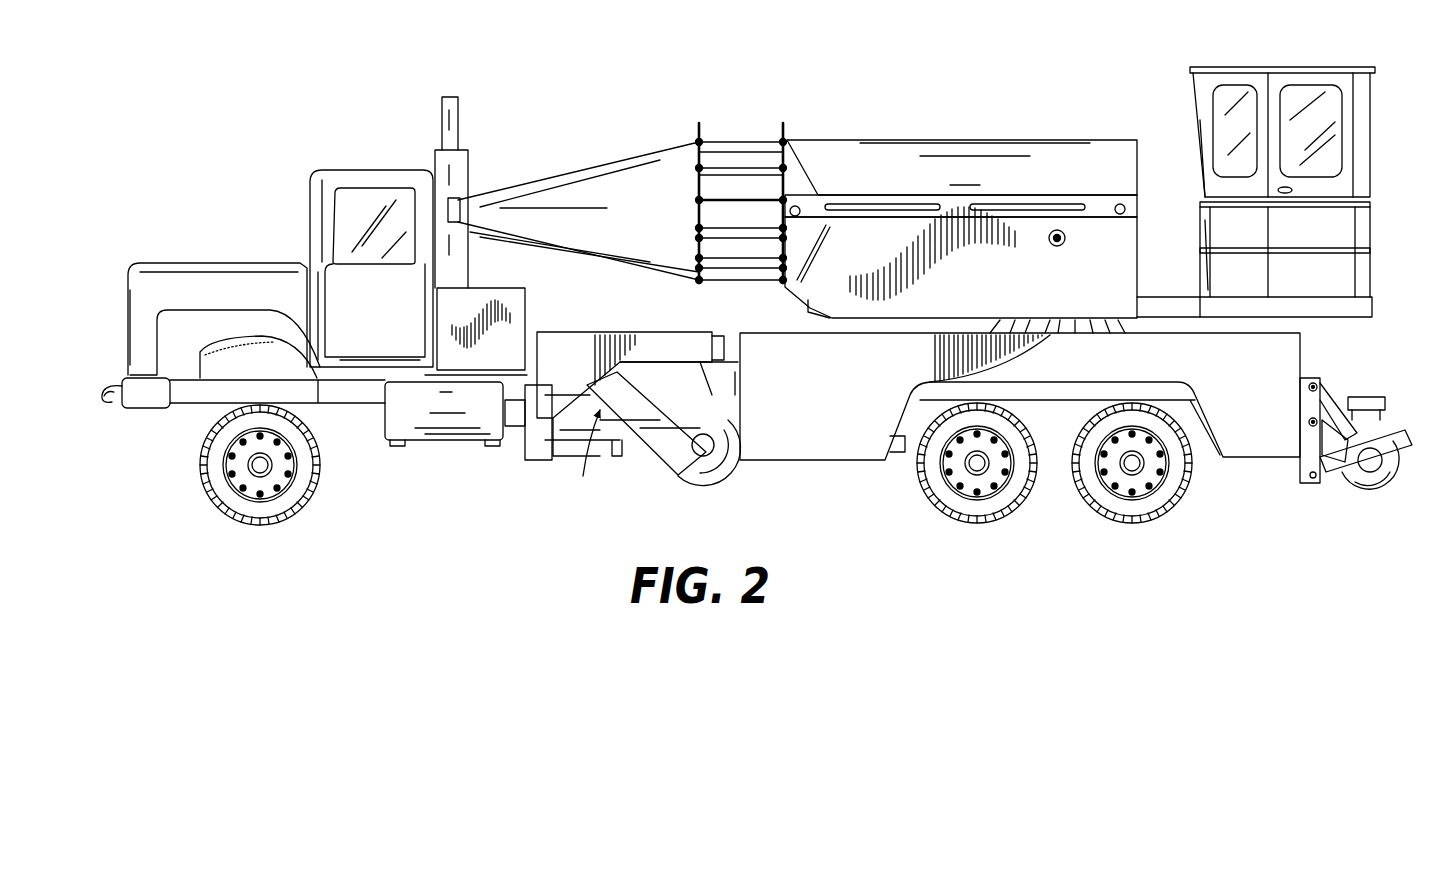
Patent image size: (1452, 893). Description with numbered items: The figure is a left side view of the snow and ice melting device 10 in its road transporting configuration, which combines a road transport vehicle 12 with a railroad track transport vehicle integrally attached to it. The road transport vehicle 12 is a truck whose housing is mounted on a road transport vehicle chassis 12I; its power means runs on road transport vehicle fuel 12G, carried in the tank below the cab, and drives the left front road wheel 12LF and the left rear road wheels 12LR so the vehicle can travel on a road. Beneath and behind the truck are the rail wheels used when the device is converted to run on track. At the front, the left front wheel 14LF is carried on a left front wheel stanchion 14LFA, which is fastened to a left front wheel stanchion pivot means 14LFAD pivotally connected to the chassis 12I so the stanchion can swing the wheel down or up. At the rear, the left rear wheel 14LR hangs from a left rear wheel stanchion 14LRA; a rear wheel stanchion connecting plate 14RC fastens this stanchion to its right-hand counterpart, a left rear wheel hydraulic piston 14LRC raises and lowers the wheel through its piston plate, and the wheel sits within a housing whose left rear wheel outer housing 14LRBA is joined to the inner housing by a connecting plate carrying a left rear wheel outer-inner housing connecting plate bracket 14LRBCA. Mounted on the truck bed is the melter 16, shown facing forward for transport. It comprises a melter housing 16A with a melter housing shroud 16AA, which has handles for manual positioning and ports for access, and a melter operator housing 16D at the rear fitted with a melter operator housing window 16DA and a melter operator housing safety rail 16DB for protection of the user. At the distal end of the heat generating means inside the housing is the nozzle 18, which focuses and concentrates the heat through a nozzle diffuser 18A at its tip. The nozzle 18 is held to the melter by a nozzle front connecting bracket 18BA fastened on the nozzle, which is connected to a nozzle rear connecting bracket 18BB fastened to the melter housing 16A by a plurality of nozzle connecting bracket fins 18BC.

The snow and ice melting device 10 is at (747, 59).
The road transport vehicle 12 is at (375, 163).
The road transport vehicle chassis 12I is at (255, 401).
The road transport vehicle fuel 12G is at (444, 442).
The road transport vehicle left front road wheel 12LF is at (257, 525).
The road transport vehicle left rear road wheel 12LR is at (1082, 502).
The railroad track transport vehicle left front wheel 14LF is at (722, 470).
The railroad track transport vehicle left front wheel stanchion 14LFA is at (683, 481).
The railroad track transport vehicle left front wheel stanchion pivot means 14LFAD is at (598, 456).
The railroad track transport vehicle left rear wheel 14LR is at (1326, 456).
The railroad track transport vehicle left rear wheel stanchion 14LRA is at (1413, 452).
The railroad track transport vehicle left rear wheel outer housing 14LRBA is at (1316, 423).
The railroad track transport vehicle left rear wheel outer-inner housing connecting 14LRBCA is at (1366, 396).
The railroad track transport vehicle left rear wheel hydraulic piston 14LRC is at (1342, 470).
The railroad track transport vehicle rear wheel stanchion connecting plate 14RC is at (1425, 409).
The melter 16 is at (992, 194).
The melter housing 16A is at (1028, 137).
The melter housing shroud 16AA is at (1112, 290).
The melter operator housing 16D is at (1315, 166).
The melter operator housing window 16DA is at (1332, 108).
The melter operator housing safety rail 16DB is at (1372, 219).
The nozzle 18 is at (655, 189).
The nozzle diffuser 18A is at (456, 200).
The nozzle front connecting bracket 18BA is at (699, 131).
The nozzle rear connecting bracket 18BB is at (785, 129).
The nozzle connecting bracket fins 18BC is at (726, 170).